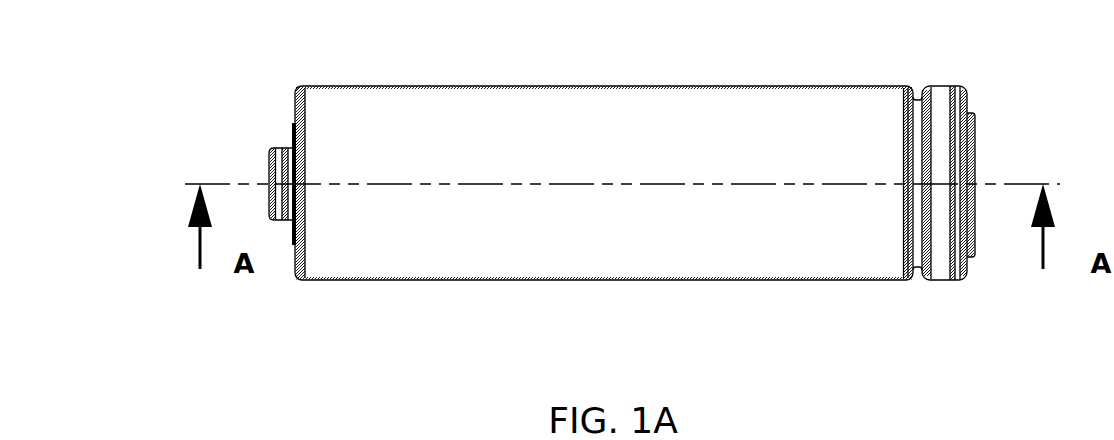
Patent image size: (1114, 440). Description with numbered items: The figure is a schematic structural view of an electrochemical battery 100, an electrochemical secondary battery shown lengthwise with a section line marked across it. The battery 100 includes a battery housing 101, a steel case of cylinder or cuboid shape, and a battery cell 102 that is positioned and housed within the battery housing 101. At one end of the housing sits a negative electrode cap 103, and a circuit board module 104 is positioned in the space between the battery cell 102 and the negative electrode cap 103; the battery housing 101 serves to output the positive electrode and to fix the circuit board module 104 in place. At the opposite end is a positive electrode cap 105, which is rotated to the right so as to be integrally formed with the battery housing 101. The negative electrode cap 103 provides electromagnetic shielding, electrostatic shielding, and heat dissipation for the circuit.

The electrochemical battery 100 is at (998, 84).
The battery housing 101 is at (400, 86).
The battery cell 102 is at (423, 255).
The negative electrode cap 103 is at (975, 192).
The circuit board module 104 is at (938, 280).
The positive electrode cap 105 is at (268, 184).